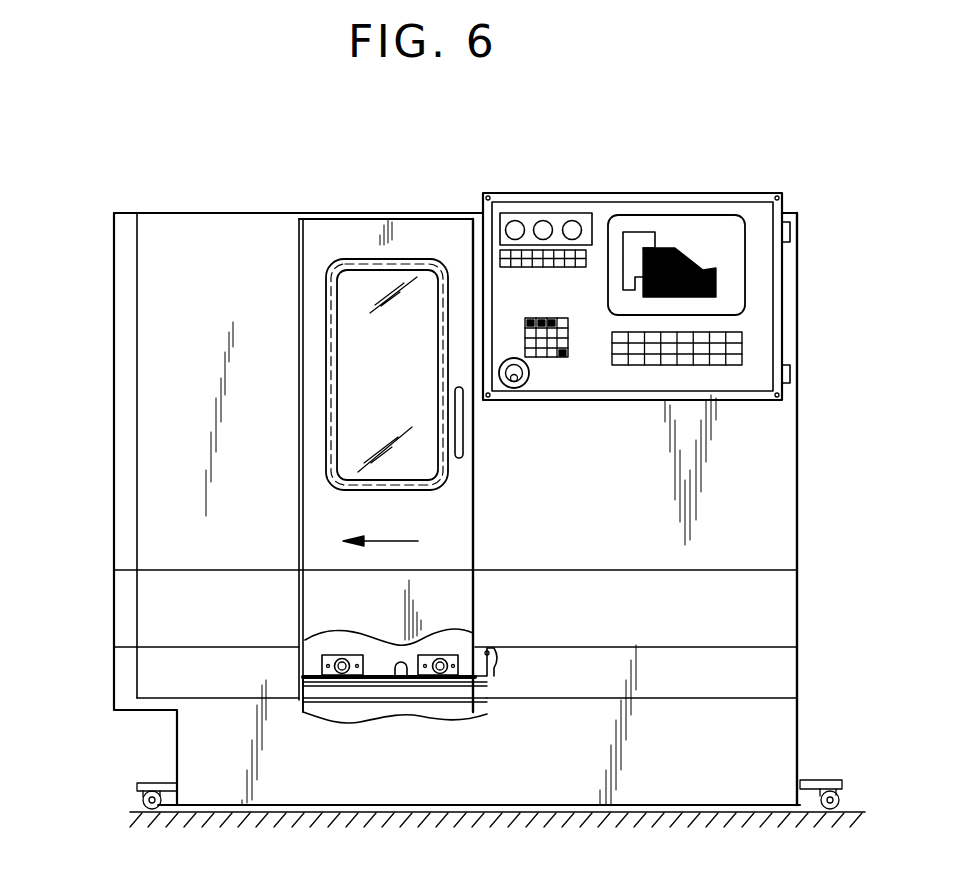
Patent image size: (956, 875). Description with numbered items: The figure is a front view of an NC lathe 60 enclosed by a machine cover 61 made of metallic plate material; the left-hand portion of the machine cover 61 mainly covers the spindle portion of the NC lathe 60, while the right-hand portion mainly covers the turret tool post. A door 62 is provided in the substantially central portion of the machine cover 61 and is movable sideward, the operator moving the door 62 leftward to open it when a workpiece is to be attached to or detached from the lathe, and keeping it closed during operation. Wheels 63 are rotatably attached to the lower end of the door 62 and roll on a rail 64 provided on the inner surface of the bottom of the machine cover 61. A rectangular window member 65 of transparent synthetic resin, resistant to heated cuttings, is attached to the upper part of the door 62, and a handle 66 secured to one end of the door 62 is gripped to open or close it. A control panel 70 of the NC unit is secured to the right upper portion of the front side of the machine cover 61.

The NC lathe 60 is at (104, 360).
The machine cover 61 is at (220, 232).
The door 62 is at (455, 243).
The wheels 63 is at (340, 687).
The rail 64 is at (405, 674).
The window member 65 is at (404, 363).
The handle 66 is at (464, 432).
The control panel 70 is at (603, 373).